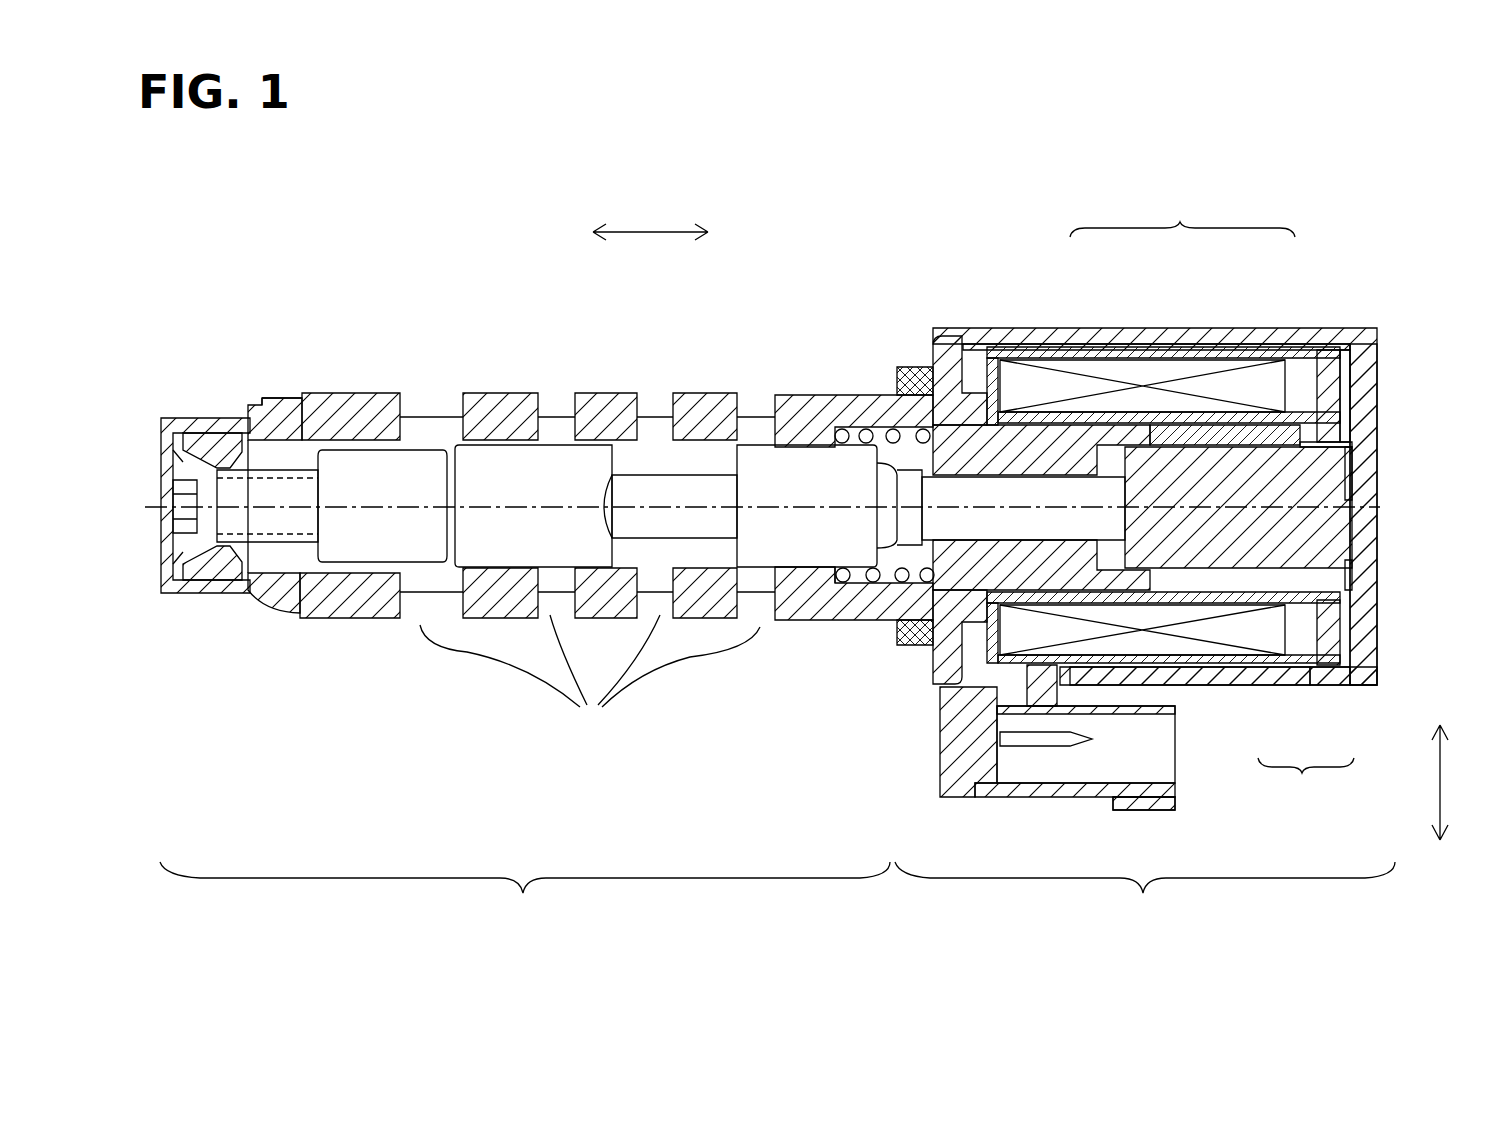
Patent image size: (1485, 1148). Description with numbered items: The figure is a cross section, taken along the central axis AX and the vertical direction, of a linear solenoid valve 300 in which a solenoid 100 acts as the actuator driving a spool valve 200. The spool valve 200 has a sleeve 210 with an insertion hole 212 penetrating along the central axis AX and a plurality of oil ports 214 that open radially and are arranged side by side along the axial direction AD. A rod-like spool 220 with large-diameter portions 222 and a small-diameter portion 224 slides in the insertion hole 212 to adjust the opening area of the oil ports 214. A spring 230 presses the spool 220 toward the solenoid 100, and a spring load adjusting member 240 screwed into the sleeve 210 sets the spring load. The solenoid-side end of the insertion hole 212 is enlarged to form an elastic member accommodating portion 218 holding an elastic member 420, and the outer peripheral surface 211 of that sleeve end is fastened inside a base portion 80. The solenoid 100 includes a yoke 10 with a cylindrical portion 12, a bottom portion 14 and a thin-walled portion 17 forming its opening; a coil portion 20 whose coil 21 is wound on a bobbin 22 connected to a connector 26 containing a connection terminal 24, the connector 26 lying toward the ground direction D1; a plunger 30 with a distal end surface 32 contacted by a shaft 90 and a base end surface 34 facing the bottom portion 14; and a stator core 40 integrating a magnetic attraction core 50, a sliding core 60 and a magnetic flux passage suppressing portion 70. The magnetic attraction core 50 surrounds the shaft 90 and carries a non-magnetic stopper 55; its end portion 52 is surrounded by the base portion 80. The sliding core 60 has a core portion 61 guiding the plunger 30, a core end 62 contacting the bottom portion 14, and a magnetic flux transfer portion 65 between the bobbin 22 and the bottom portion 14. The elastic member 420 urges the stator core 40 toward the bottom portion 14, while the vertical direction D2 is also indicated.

The linear solenoid valve 300 is at (334, 197).
The spool valve 200 is at (642, 620).
The solenoid 100 is at (1182, 559).
The yoke 10 is at (1393, 313).
The cylindrical portion 12 is at (1022, 344).
The bottom portion 14 is at (1362, 412).
The thin-walled portion 17 is at (935, 336).
The coil portion 20 is at (1214, 717).
The coil 21 is at (1225, 633).
The bobbin 22 is at (1295, 633).
The connection terminal 24 is at (1060, 750).
The connector 26 is at (1192, 820).
The plunger 30 is at (1335, 552).
The distal end surface 32 is at (1148, 425).
The base end surface 34 is at (1350, 535).
The stator core 40 is at (1155, 425).
The magnetic attraction core 50 is at (1090, 385).
The magnetic attraction core end portion 52 is at (993, 358).
The stopper 55 is at (1120, 620).
The sliding core 60 is at (1310, 400).
The core portion 61 is at (1352, 482).
The core end 62 is at (1352, 453).
The magnetic flux transfer portion 65 is at (1372, 388).
The magnetic flux passage suppressing portion 70 is at (1160, 430).
The base portion 80 is at (960, 605).
The shaft 90 is at (890, 583).
The sleeve 210 is at (558, 470).
The outer peripheral surface 211 is at (905, 368).
The insertion hole 212 is at (360, 470).
The oil ports 214 is at (590, 683).
The elastic member accommodating portion 218 is at (870, 430).
The spool 220 is at (755, 490).
The large-diameter portions 222 is at (612, 470).
The small-diameter portion 224 is at (650, 488).
The spring 230 is at (258, 420).
The spring load adjusting member 240 is at (198, 440).
The elastic member 420 is at (843, 583).
The central axis AX is at (742, 507).
The axial direction AD is at (650, 217).
The ground direction D1 is at (1439, 801).
The vertical direction D2 is at (1439, 705).